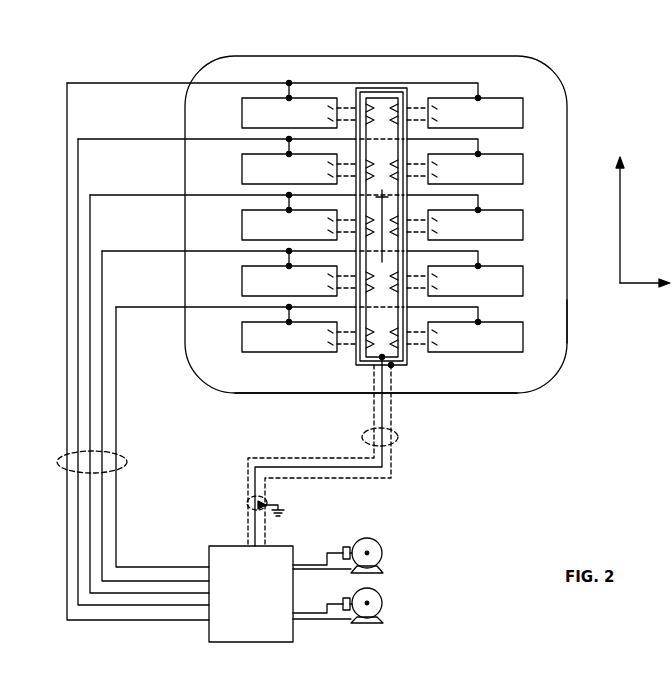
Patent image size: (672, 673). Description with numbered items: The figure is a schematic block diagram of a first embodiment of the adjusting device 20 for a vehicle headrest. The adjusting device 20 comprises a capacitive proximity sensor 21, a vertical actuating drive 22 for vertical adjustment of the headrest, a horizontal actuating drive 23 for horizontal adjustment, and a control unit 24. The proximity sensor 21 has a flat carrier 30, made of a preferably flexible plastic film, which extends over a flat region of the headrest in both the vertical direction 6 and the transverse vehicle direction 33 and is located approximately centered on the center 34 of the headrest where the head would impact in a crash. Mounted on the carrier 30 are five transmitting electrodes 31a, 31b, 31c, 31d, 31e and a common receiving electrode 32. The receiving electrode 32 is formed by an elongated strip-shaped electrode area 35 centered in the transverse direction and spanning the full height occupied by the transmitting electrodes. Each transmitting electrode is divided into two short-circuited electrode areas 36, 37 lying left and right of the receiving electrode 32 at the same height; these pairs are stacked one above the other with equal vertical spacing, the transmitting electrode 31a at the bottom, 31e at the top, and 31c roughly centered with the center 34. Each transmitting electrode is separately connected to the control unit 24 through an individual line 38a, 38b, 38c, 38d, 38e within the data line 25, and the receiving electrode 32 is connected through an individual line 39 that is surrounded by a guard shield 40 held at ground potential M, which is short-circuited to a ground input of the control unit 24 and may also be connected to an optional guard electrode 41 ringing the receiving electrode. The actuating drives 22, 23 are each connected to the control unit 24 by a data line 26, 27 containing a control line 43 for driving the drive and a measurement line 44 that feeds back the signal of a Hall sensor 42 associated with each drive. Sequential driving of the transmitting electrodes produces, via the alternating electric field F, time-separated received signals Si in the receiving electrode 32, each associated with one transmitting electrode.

The adjusting device 20 is at (534, 408).
The capacitive proximity sensor 21 is at (566, 59).
The vertical actuating drive 22 is at (383, 552).
The horizontal actuating drive 23 is at (383, 605).
The control unit 24 is at (245, 598).
The data line 25 is at (62, 457).
The data line 26 is at (307, 562).
The data line 27 is at (306, 621).
The carrier 30 is at (565, 360).
The transmitting electrode 31a is at (242, 332).
The transmitting electrode 31b is at (242, 276).
The transmitting electrode 31c is at (242, 220).
The transmitting electrode 31d is at (242, 164).
The transmitting electrode 31e is at (242, 108).
The receiving electrode 32 is at (385, 188).
The transverse vehicle direction 33 is at (647, 282).
The center 34 is at (347, 222).
The electrode area 35 is at (388, 100).
The electrode area 36 is at (281, 122).
The electrode area 37 is at (470, 122).
The individual line 38a is at (117, 526).
The individual line 38b is at (104, 491).
The individual line 38c is at (92, 436).
The individual line 38d is at (78, 400).
The individual line 38e is at (67, 336).
The individual line 39 is at (369, 469).
The guard shield 40 is at (283, 457).
The guard electrode 41 is at (400, 369).
The Hall sensor 42 is at (344, 546).
The control line 43 is at (306, 571).
The measurement line 44 is at (333, 552).
The vertical direction 6 is at (621, 195).
The alternating electric field F is at (348, 103).
The ground potential M is at (275, 503).
The received signals Si is at (383, 410).